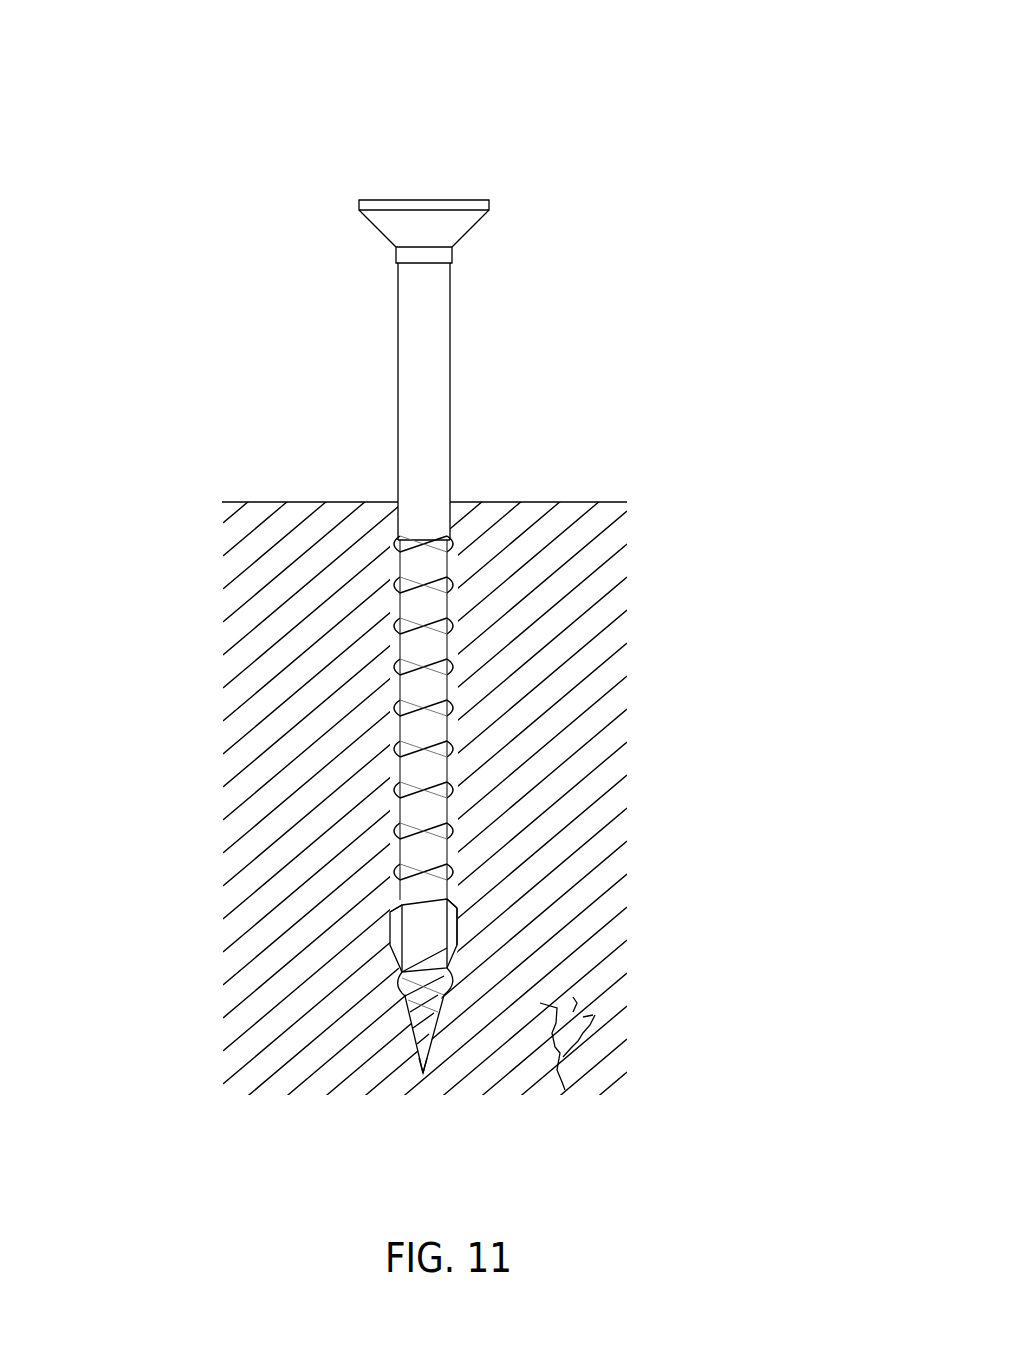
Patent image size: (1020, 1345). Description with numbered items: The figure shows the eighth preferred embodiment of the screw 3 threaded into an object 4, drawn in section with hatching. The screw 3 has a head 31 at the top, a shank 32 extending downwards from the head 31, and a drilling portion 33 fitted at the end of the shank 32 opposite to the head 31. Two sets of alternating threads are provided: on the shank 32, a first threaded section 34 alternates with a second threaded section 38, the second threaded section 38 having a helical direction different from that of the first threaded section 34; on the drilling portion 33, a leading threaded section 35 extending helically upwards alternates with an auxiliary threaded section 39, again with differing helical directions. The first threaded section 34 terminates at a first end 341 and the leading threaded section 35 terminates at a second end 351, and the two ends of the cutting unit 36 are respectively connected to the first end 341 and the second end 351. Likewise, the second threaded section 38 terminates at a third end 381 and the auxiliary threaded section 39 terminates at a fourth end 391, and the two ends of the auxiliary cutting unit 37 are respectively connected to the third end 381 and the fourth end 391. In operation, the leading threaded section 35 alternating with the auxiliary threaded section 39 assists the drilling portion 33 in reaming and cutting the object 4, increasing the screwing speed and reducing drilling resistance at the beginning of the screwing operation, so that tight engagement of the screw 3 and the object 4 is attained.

The screw 3 is at (197, 133).
The object 4 is at (610, 500).
The head 31 is at (443, 198).
The shank 32 is at (443, 325).
The drilling portion 33 is at (425, 1068).
The first threaded section 34 is at (464, 896).
The first end 341 is at (462, 912).
The leading threaded section 35 is at (403, 1048).
The second end 351 is at (455, 952).
The cutting unit 36 is at (457, 935).
The auxiliary cutting unit 37 is at (390, 920).
The second threaded section 38 is at (383, 888).
The third end 381 is at (391, 901).
The auxiliary threaded section 39 is at (399, 1012).
The fourth end 391 is at (390, 940).